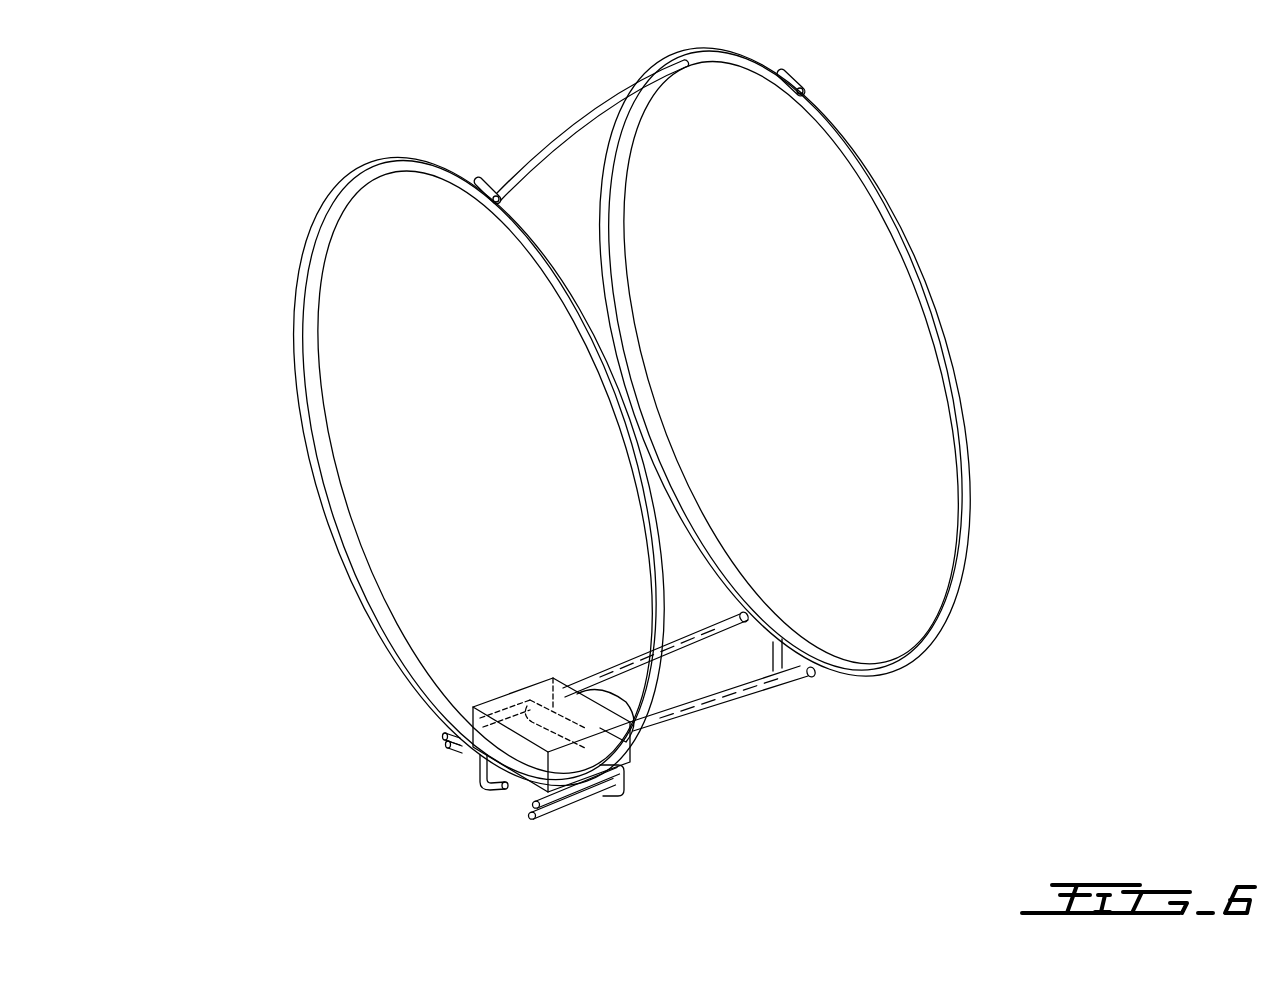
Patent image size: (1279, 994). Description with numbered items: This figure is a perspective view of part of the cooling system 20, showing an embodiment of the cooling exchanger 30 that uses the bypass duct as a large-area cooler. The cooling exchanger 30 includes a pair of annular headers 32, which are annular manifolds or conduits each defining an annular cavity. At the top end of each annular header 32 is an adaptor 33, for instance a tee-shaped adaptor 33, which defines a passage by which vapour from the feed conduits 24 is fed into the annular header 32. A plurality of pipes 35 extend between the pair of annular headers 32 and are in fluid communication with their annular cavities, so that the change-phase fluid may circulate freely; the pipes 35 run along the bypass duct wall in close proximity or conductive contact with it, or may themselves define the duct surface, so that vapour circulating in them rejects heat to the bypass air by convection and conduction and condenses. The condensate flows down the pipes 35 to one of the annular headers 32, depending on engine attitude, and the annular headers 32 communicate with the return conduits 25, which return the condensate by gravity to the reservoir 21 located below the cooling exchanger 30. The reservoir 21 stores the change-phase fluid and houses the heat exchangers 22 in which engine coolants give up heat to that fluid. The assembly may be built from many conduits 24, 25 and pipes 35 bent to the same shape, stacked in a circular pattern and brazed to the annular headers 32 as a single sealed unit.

The cooling system 20 is at (417, 852).
The reservoir 21 is at (533, 727).
The heat exchangers 22 is at (548, 818).
The feed conduits 24 is at (693, 638).
The return conduits 25 is at (780, 653).
The cooling exchanger 30 is at (236, 200).
The annular headers 32 is at (902, 240).
The adaptor 33 is at (490, 178).
The pipes 35 is at (596, 108).